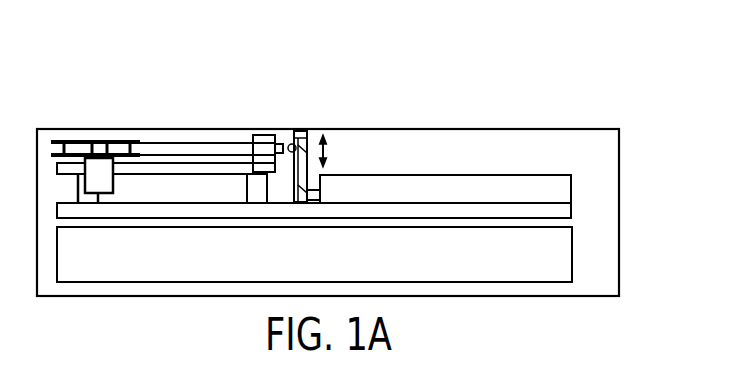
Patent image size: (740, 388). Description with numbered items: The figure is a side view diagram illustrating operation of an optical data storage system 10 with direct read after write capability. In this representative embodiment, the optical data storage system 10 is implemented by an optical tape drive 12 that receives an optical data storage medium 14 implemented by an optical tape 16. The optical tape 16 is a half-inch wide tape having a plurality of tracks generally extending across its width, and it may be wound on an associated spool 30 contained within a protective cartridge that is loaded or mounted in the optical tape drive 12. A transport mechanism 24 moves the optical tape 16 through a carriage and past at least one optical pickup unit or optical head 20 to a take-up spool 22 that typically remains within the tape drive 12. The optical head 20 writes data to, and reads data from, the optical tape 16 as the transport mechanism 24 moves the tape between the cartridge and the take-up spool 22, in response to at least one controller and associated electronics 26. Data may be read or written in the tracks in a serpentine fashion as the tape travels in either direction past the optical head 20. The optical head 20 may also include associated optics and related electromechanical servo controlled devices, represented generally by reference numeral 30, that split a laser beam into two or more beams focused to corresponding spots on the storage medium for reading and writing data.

The optical data storage system 10 is at (86, 72).
The optical tape drive 12 is at (619, 155).
The optical data storage medium 14 is at (207, 136).
The optical tape 16 is at (155, 148).
The optical pickup unit (OPU) or optical head 20 is at (567, 190).
The take-up spool 22 is at (77, 140).
The transport mechanism 24 is at (122, 189).
The controller and associated electronics 26 is at (563, 262).
The spool 30 is at (305, 126).